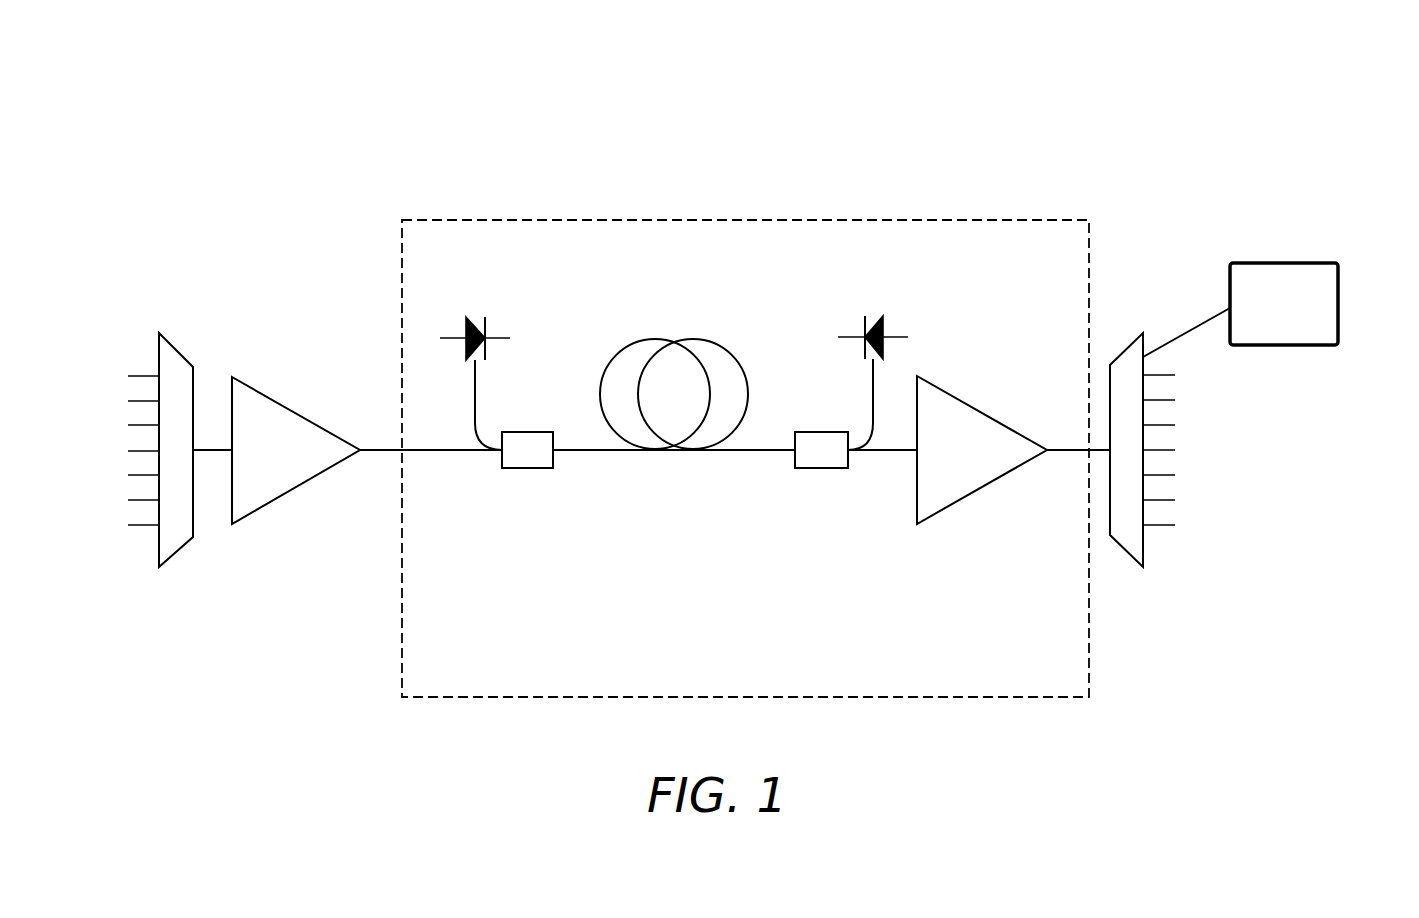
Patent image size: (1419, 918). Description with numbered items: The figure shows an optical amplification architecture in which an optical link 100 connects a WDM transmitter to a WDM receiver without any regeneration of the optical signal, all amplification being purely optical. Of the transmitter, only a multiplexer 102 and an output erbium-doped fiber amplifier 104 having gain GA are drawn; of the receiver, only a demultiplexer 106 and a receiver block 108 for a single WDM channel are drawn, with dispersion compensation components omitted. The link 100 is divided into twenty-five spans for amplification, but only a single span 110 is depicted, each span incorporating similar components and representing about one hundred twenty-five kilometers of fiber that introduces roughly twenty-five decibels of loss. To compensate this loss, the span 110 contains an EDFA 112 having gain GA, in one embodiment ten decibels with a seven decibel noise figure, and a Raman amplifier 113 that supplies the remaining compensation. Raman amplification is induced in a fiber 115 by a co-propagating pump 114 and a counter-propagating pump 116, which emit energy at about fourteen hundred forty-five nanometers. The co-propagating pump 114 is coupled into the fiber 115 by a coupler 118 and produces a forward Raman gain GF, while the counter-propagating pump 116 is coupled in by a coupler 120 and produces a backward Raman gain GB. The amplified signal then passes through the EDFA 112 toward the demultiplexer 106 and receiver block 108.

The optical link 100 is at (407, 137).
The multiplexer 102 is at (178, 348).
The output erbium-doped fiber amplifier 104 is at (283, 402).
The demultiplexer 106 is at (1127, 343).
The receiver block 108 is at (1307, 263).
The span 110 is at (970, 217).
The erbium-doped fiber amplifier 112 is at (983, 410).
The Raman amplifier 113 is at (783, 302).
The co-propagating pump 114 is at (466, 327).
The fiber 115 is at (657, 340).
The counter-propagating pump 116 is at (883, 325).
The coupler 118 is at (530, 470).
The coupler 120 is at (820, 468).